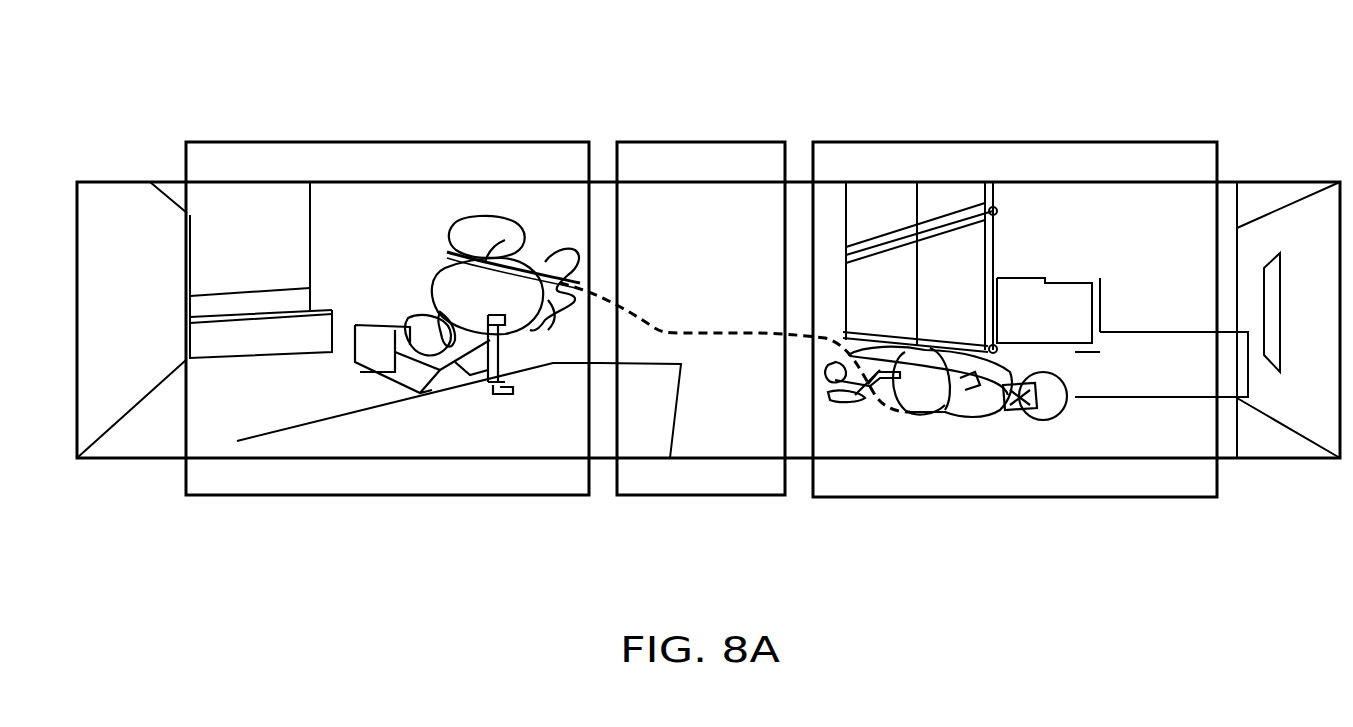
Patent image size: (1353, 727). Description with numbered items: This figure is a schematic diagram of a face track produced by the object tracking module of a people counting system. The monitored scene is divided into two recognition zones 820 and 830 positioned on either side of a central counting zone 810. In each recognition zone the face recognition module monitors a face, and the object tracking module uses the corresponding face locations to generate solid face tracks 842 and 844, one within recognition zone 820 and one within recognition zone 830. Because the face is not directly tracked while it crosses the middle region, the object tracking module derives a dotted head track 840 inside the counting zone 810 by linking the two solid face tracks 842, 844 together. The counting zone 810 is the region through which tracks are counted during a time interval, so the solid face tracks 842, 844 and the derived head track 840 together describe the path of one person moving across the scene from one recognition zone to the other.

The counting zone 810 is at (700, 142).
The recognition zone 820 is at (388, 142).
The recognition zone 830 is at (1017, 142).
The dotted head track 840 is at (705, 330).
The solid face track 842 is at (492, 247).
The solid face track 844 is at (940, 370).